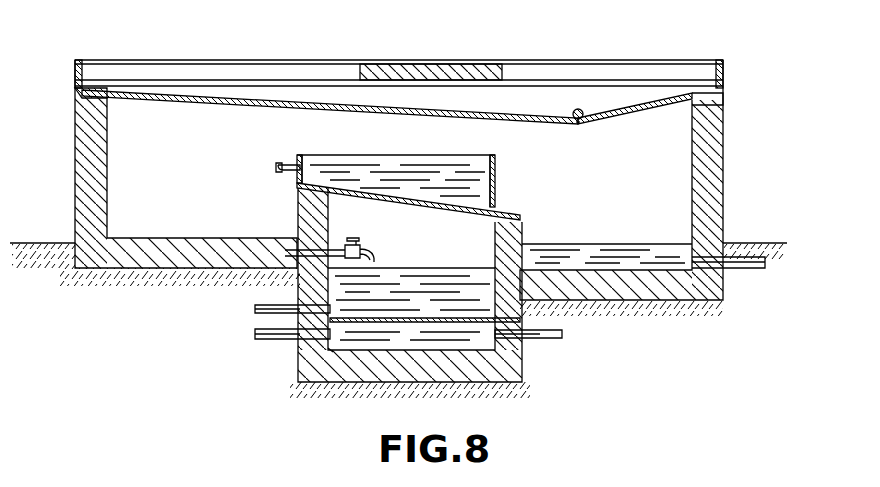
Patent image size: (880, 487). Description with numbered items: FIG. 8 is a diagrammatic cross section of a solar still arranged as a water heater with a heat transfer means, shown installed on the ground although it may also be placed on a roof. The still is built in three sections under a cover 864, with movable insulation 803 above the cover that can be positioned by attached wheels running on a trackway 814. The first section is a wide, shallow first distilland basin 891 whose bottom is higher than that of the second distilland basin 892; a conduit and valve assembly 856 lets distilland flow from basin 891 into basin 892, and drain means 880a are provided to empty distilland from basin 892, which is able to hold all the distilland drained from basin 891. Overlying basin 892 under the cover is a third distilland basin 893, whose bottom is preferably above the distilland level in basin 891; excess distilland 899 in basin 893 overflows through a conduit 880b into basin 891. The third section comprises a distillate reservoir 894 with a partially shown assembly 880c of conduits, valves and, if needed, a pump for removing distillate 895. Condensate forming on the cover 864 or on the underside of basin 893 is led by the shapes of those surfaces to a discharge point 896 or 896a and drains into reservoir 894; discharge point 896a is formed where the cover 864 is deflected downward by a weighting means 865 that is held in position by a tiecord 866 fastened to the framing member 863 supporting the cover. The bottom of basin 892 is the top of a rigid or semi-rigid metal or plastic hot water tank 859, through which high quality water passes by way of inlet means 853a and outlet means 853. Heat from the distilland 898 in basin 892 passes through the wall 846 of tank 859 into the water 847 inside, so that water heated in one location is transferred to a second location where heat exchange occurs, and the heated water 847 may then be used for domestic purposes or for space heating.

The insulation 803 is at (400, 66).
The trackway 814 is at (225, 82).
The wall of tank 846 is at (500, 320).
The water 847 is at (522, 372).
The outlet means 853 is at (560, 338).
The inlet means 853a is at (258, 332).
The conduit and valve assembly 856 is at (335, 250).
The hot water tank 859 is at (330, 350).
The framing member 863 is at (723, 95).
The cover 864 is at (268, 102).
The weighting means 865 is at (573, 113).
The tiecord 866 is at (612, 108).
The drain means 880a is at (258, 306).
The conduit 880b is at (280, 166).
The assembly of conduits, valves and pump 880c is at (750, 268).
The first distilland basin 891 is at (180, 238).
The second distilland basin 892 is at (491, 268).
The third distilland basin 893 is at (497, 175).
The distillate reservoir 894 is at (615, 250).
The distillate 895 is at (692, 250).
The discharge point 896 is at (522, 217).
The discharge point 896a is at (580, 124).
The distilland 898 is at (420, 284).
The upper tank 899 is at (385, 157).